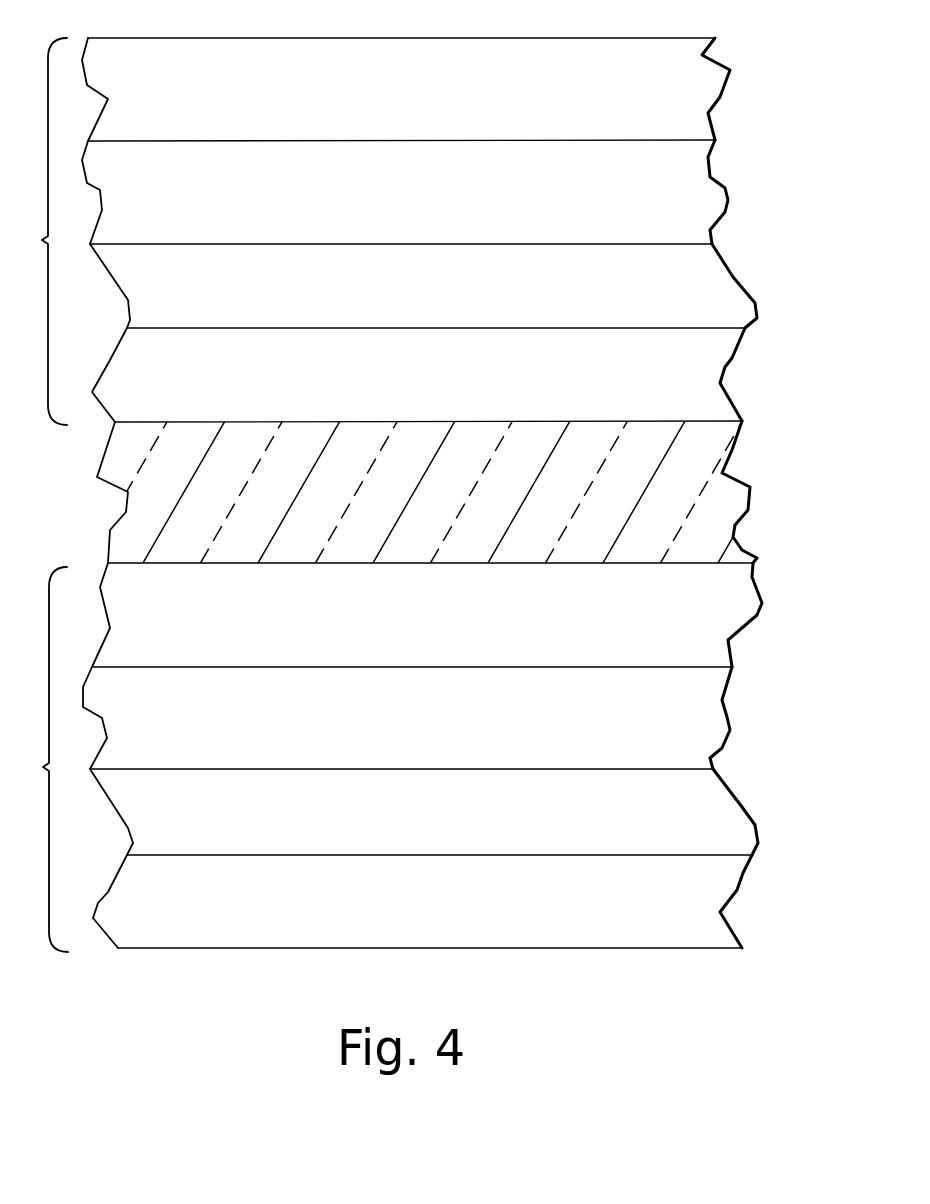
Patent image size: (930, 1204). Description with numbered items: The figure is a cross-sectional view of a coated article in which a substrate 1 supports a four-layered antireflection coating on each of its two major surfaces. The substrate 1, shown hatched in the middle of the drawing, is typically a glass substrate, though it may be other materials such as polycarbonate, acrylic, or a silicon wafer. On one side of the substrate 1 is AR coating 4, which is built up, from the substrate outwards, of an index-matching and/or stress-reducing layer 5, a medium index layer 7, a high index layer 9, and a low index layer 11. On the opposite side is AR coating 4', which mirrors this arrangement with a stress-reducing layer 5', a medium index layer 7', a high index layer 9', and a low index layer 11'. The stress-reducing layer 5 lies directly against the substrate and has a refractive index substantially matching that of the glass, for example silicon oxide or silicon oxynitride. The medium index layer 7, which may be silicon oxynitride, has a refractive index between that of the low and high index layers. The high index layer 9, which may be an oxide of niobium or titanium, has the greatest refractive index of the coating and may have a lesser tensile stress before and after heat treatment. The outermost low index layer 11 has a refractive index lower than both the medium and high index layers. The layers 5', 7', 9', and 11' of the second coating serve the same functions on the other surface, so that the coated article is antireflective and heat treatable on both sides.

The substrate 1 is at (708, 490).
The AR coating 4 is at (408, 231).
The AR coating 4' is at (415, 757).
The stress-reducing layer 5 is at (442, 375).
The stress-reducing layer 5' is at (454, 615).
The medium index layer 7 is at (445, 286).
The medium index layer 7' is at (440, 718).
The high index layer 9 is at (429, 192).
The high index layer 9' is at (451, 812).
The low index layer 11 is at (439, 89).
The low index layer 11' is at (454, 901).